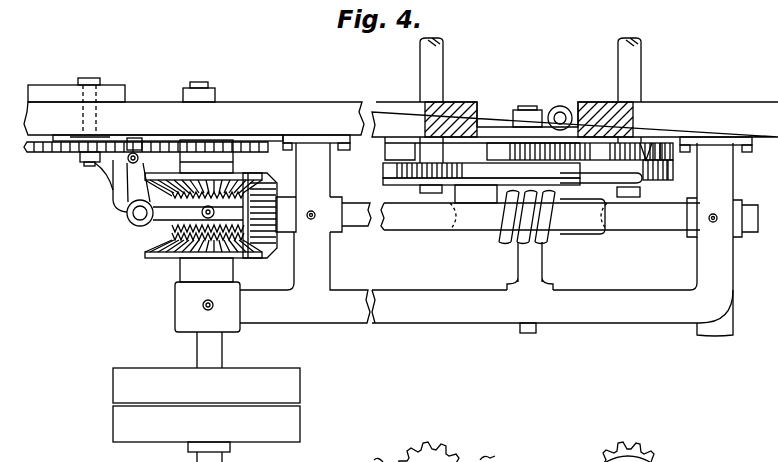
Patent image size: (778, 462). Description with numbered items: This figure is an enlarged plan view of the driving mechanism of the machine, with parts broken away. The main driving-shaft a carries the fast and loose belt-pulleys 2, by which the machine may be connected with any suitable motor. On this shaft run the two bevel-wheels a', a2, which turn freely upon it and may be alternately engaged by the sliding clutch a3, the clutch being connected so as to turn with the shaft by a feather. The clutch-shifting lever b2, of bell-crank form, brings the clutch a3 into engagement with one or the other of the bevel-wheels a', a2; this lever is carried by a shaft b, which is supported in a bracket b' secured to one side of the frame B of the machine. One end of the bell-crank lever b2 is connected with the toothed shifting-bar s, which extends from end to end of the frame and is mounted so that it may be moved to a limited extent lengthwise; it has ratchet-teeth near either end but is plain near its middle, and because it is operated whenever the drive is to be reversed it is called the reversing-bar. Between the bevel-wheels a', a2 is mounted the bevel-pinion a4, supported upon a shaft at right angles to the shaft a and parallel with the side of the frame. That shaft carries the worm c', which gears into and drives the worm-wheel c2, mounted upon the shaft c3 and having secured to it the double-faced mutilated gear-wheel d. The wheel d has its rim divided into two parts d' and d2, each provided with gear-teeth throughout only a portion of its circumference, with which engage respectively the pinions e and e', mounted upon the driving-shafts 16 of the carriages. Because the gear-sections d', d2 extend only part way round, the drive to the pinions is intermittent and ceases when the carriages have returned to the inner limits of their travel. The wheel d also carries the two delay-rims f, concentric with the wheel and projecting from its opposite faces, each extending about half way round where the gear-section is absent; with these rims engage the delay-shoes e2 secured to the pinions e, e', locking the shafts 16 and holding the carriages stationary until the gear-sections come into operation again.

The frame of the machine B is at (194, 109).
The toothed shifting-bar s is at (43, 153).
The bracket b' is at (87, 175).
The shaft b is at (90, 213).
The clutch-shifting lever b2 is at (157, 222).
The bevel-wheel a2 is at (252, 173).
The sliding clutch a3 is at (172, 226).
The bevel-wheel a' is at (203, 267).
The bevel-pinion a4 is at (262, 258).
The main driving-shaft a is at (207, 313).
The fast and loose belt-pulleys 2 is at (206, 415).
The driving-shafts of the carriages 16 is at (418, 73).
The gear-section d2 is at (488, 148).
The pinion e is at (466, 179).
The double-faced mutilated gear-wheel d is at (624, 176).
The delay-shoe e2 is at (643, 148).
The pinion e' is at (665, 281).
The delay-rim f is at (668, 137).
The gear-section d' is at (468, 221).
The worm c' is at (540, 231).
The worm-wheel c2 is at (579, 230).
The shaft c3 is at (522, 333).